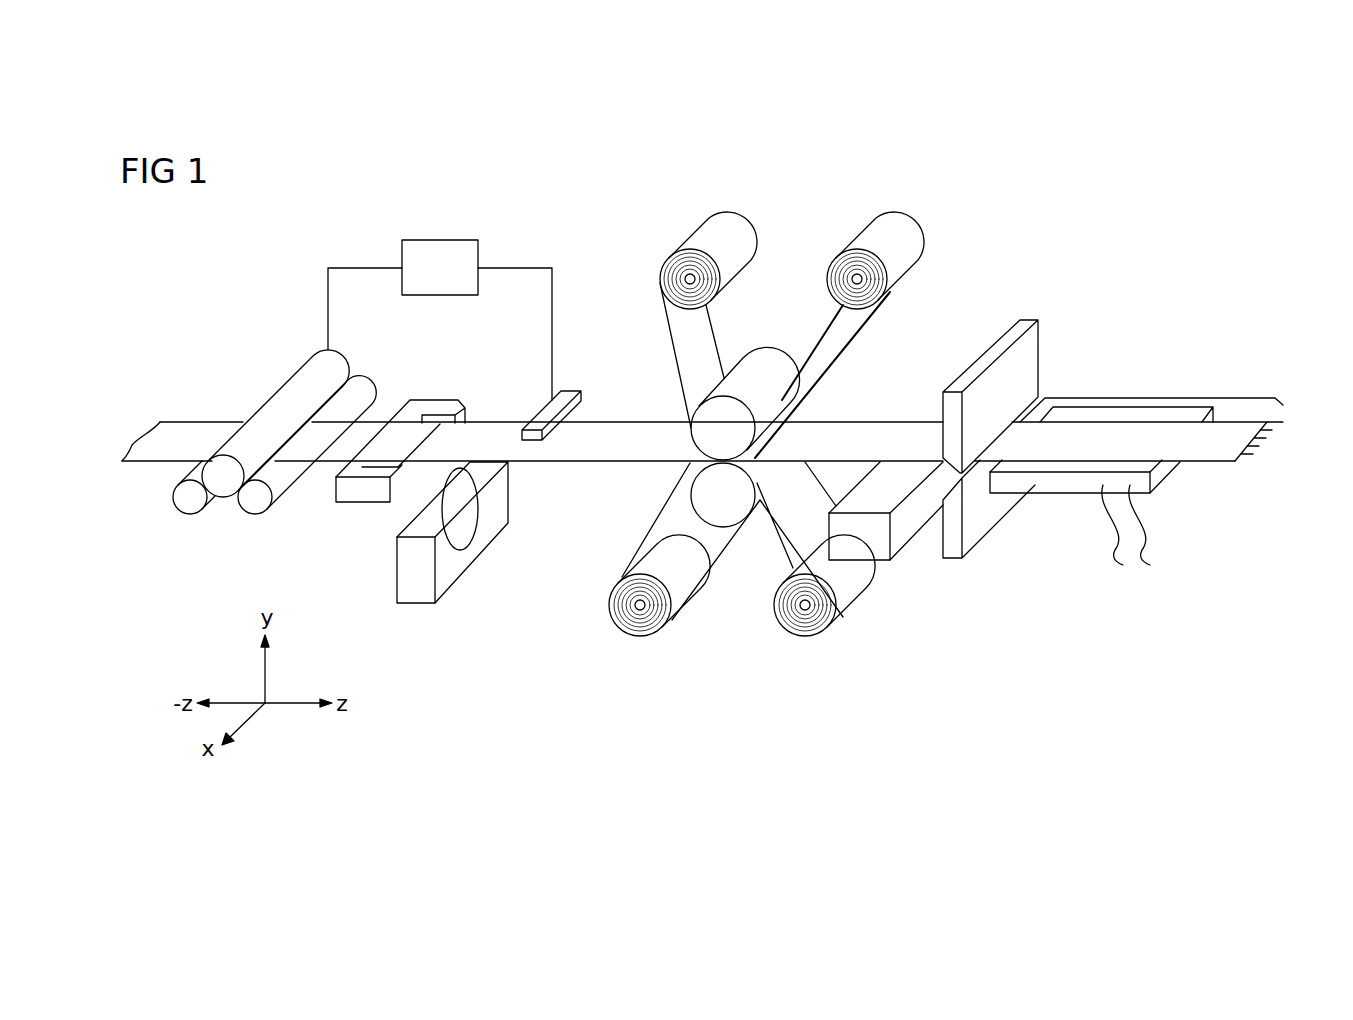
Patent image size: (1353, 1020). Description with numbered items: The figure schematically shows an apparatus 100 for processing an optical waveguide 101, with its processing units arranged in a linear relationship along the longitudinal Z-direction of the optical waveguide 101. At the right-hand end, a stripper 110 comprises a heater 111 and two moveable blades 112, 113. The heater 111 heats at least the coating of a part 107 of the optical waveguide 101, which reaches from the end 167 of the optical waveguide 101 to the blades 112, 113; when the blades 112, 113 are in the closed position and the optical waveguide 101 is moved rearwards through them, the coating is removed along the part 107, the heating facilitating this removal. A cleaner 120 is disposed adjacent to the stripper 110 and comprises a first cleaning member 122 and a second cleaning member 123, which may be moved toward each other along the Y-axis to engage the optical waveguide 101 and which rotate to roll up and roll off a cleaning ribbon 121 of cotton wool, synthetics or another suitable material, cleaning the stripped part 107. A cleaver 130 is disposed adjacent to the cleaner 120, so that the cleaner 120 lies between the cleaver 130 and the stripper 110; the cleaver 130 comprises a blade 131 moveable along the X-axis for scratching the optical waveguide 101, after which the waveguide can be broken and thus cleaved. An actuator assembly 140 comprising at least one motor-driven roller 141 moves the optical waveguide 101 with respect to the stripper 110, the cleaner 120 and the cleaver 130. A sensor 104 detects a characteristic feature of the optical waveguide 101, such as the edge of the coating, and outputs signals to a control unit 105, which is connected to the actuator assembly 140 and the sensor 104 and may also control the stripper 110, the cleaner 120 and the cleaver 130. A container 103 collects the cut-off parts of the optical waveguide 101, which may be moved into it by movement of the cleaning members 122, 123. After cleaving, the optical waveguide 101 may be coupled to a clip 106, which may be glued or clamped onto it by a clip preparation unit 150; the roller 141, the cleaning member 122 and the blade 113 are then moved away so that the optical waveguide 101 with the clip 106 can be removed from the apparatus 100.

The apparatus 100 is at (205, 297).
The optical waveguide 101 is at (188, 422).
The container 103 is at (853, 548).
The sensor 104 is at (570, 390).
The control unit 105 is at (437, 240).
The clip 106 is at (353, 492).
The part of the optical waveguide 107 is at (1168, 398).
The stripper 110 is at (1065, 345).
The heater 111 is at (1053, 483).
The blade 112 is at (955, 548).
The blade 113 is at (1005, 340).
The cleaner 120 is at (722, 605).
The cleaning ribbon 121 is at (670, 267).
The first cleaning member 122 is at (660, 535).
The second cleaning member 123 is at (677, 325).
The cleaver 130 is at (476, 600).
The blade 131 is at (483, 508).
The actuator assembly 140 is at (206, 532).
The roller 141 is at (220, 487).
The clip preparation unit 150 is at (357, 540).
The end of the optical waveguide 167 is at (1270, 467).